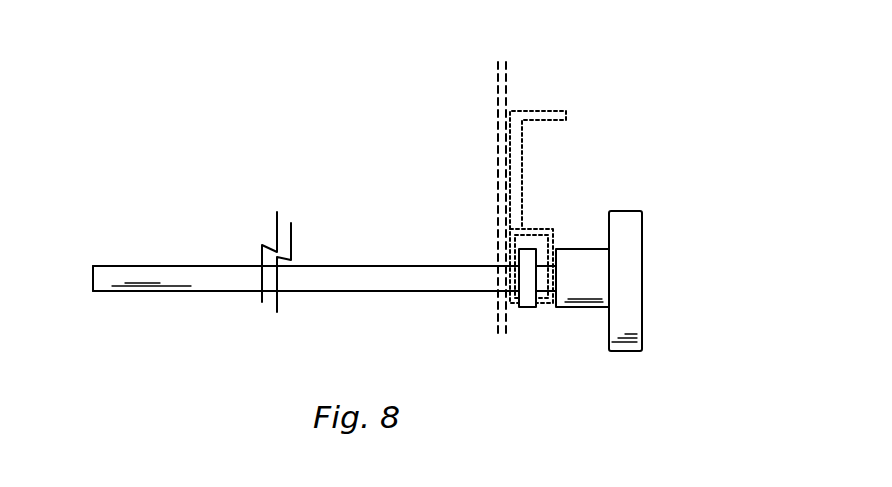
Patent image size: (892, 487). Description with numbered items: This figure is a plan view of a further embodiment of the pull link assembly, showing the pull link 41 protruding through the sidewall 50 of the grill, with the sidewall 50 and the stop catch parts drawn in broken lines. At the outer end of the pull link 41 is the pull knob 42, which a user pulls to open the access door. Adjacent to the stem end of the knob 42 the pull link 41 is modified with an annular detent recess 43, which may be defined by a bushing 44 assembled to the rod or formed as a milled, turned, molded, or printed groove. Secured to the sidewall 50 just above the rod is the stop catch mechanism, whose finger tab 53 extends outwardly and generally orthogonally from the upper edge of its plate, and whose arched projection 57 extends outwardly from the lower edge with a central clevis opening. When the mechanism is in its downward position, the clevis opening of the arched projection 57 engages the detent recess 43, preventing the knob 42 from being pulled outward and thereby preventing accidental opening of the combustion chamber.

The pull link 41 is at (235, 263).
The pull knob 42 is at (642, 257).
The annular detent recess 43 is at (542, 308).
The bushing 44 is at (528, 304).
The sidewall 50 is at (497, 63).
The finger tab 53 is at (545, 108).
The arched projection 57 is at (552, 229).